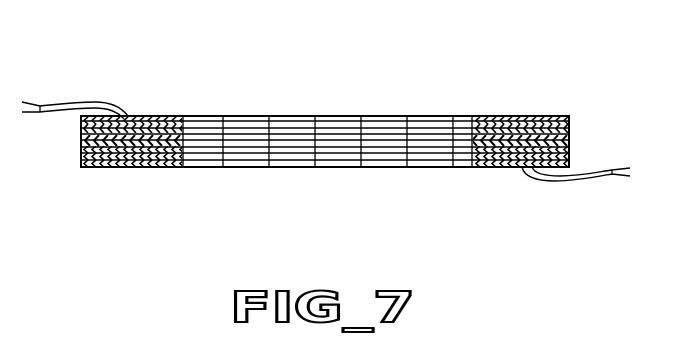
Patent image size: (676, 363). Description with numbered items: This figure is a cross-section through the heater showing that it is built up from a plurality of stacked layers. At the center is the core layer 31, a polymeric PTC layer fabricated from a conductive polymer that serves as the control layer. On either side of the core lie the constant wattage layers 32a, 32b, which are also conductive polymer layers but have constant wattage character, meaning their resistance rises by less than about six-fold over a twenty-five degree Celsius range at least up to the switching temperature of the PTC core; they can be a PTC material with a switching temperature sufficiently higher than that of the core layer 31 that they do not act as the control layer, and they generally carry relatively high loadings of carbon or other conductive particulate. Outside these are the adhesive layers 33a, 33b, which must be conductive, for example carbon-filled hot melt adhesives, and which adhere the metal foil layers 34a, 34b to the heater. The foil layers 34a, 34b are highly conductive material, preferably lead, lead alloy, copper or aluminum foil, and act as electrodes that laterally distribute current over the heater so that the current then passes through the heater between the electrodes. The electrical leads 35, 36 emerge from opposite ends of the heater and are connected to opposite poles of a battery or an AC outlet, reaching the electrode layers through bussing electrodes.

The core layer 31 is at (206, 140).
The constant wattage layer 32a is at (198, 150).
The constant wattage layer 32b is at (200, 132).
The adhesive layer 33a is at (201, 157).
The adhesive layer 33b is at (195, 124).
The metal foil layer 34a is at (143, 167).
The metal foil layer 34b is at (143, 116).
The electrical lead 35 is at (62, 105).
The electrical lead 36 is at (603, 170).